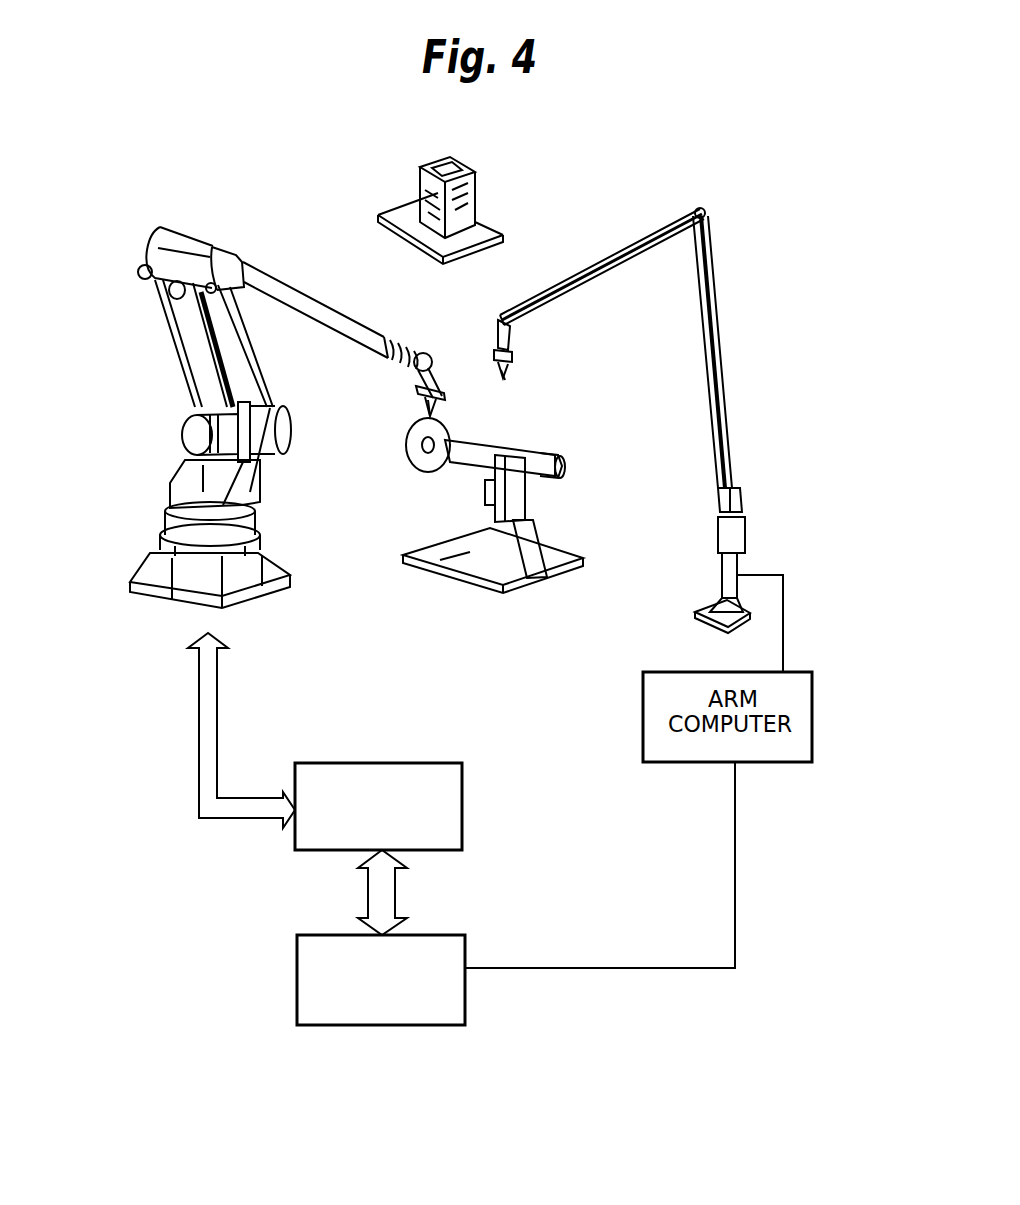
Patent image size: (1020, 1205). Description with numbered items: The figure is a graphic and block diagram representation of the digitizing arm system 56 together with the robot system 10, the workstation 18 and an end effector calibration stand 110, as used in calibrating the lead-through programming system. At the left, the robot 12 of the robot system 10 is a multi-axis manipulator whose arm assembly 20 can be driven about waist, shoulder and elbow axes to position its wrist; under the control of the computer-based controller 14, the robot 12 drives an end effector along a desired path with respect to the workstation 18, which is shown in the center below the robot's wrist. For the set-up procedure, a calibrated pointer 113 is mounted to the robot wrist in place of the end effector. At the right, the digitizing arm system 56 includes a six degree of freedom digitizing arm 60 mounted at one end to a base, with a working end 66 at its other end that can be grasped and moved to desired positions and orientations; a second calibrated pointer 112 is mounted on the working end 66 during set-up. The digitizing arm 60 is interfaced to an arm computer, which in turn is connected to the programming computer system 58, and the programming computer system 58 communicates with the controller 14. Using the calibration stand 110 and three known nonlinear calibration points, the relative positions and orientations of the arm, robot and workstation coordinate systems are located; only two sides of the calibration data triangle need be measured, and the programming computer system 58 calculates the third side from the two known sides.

The robot system 10 is at (207, 835).
The robot 12 is at (167, 368).
The controller 14 is at (415, 770).
The workstation 18 is at (455, 598).
The arm assembly 20 is at (280, 283).
The digitizing arm system 56 is at (765, 527).
The programming computer system 58 is at (465, 940).
The digitizing arm 60 is at (722, 332).
The working end 66 is at (512, 336).
The end effector calibration stand 110 is at (488, 228).
The calibrated pointer 112 is at (505, 372).
The calibrated pointer 113 is at (434, 402).